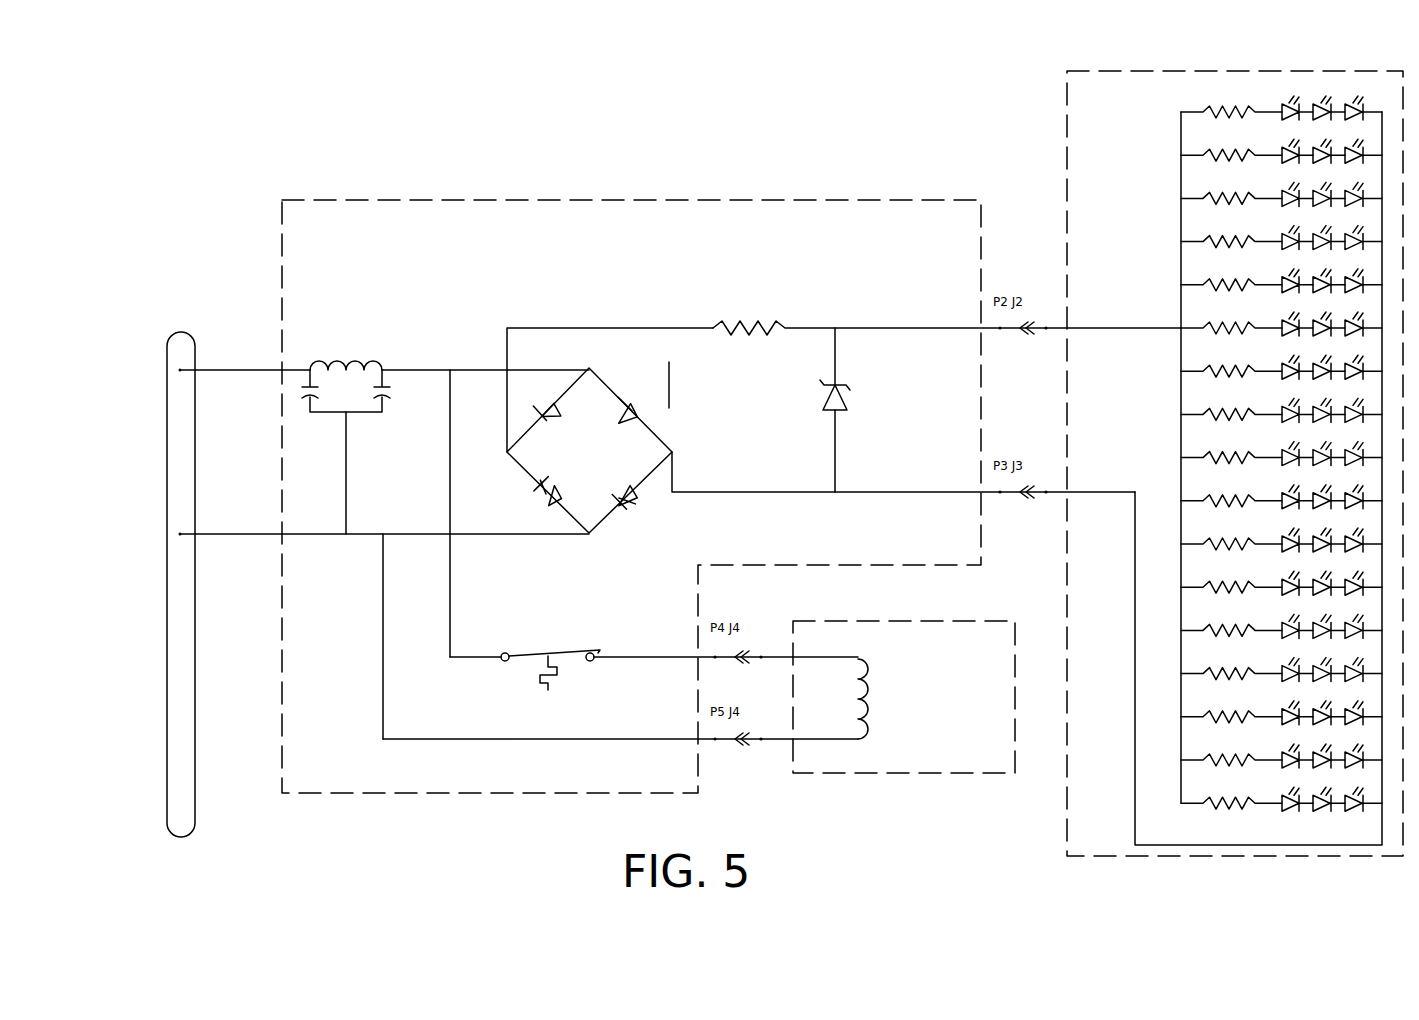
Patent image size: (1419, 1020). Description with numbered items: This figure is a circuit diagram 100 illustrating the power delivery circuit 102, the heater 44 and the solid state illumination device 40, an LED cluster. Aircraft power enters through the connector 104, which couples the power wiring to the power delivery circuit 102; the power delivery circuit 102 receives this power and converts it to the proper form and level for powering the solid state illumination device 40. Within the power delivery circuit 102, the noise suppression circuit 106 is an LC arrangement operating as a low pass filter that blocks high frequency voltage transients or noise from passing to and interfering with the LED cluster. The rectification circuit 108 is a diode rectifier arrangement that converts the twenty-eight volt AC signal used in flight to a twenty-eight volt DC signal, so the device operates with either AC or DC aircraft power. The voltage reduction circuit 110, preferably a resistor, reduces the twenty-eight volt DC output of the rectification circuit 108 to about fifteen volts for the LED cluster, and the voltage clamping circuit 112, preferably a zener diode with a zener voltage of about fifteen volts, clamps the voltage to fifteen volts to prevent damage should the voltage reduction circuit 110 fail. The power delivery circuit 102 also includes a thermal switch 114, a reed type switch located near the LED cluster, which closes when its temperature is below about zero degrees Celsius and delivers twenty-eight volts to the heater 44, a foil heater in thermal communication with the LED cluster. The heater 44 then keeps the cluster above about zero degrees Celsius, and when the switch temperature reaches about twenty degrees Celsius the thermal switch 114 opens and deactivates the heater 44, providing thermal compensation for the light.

The solid state illumination device 40 is at (1113, 856).
The heater 44 is at (873, 774).
The circuit diagram 100 is at (380, 168).
The power delivery circuit 102 is at (740, 200).
The connector 104 is at (191, 333).
The noise suppression circuit 106 is at (383, 320).
The rectification circuit 108 is at (618, 380).
The voltage reduction circuit 110 is at (792, 300).
The voltage clamping circuit 112 is at (815, 403).
The thermal switch 114 is at (568, 632).